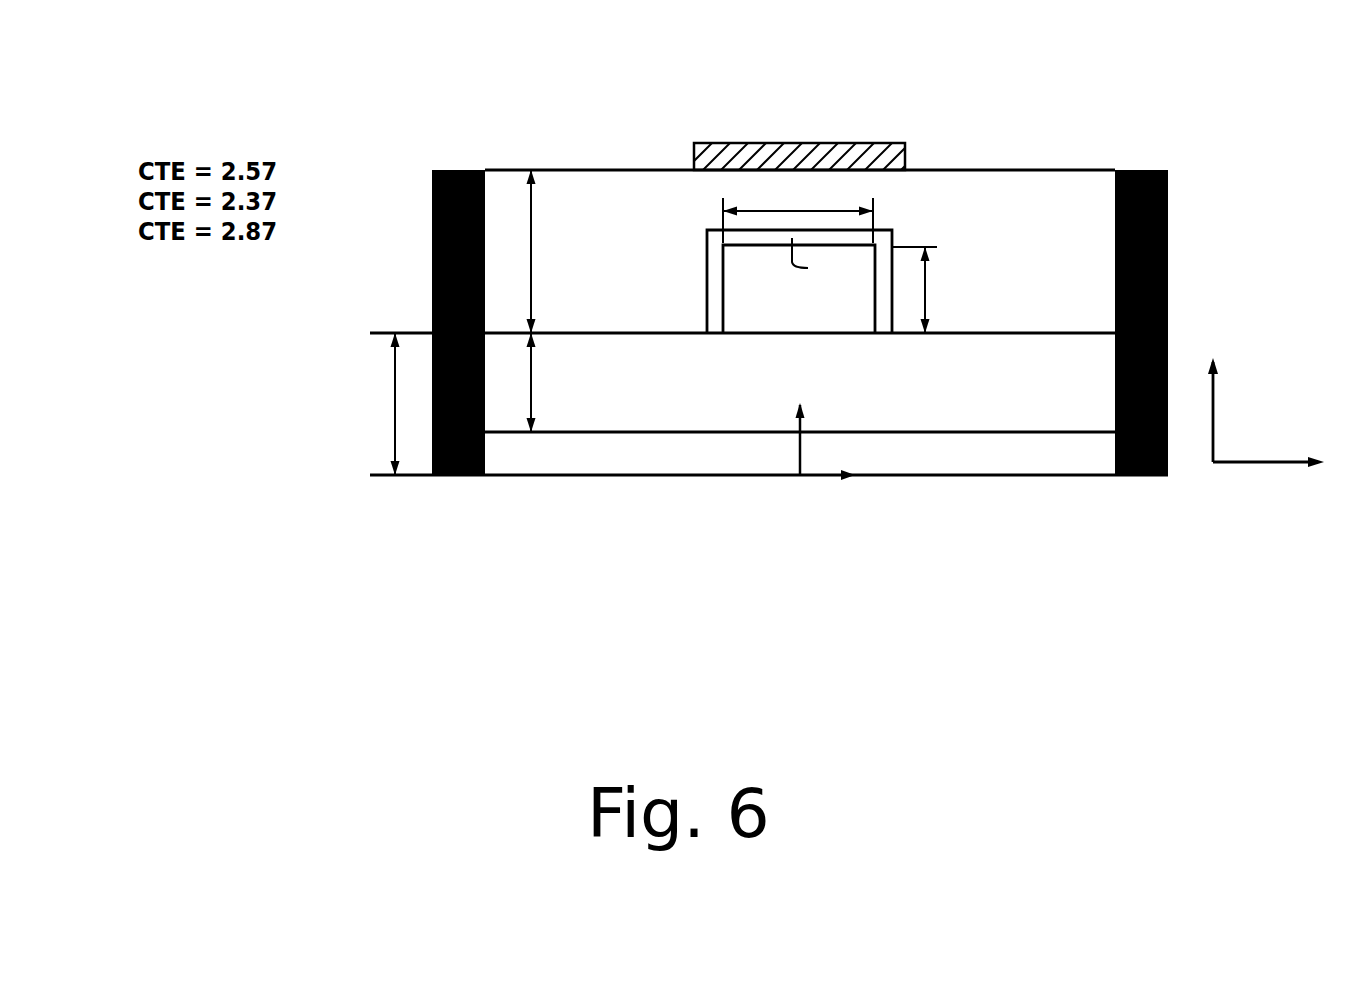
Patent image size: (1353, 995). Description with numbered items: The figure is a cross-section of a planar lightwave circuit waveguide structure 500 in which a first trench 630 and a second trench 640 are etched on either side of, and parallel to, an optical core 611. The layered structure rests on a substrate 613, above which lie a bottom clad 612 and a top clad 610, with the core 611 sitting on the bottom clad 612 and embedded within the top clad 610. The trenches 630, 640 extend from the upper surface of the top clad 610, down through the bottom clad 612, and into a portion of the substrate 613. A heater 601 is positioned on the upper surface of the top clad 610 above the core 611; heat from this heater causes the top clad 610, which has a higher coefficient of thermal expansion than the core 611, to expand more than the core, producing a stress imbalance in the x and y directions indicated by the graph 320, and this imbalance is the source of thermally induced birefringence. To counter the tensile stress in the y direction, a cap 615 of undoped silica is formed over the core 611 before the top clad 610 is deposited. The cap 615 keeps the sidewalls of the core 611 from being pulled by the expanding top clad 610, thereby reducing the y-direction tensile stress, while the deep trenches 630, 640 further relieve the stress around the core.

The optical waveguide device 500 is at (769, 243).
The heater 601 is at (780, 125).
The top clad 610 is at (1028, 152).
The core 611 is at (708, 298).
The bottom clad 612 is at (1010, 403).
The substrate 613 is at (930, 475).
The cap 615 is at (692, 230).
The first trench 630 is at (418, 230).
The second trench 640 is at (1184, 232).
The graph 320 is at (1262, 420).